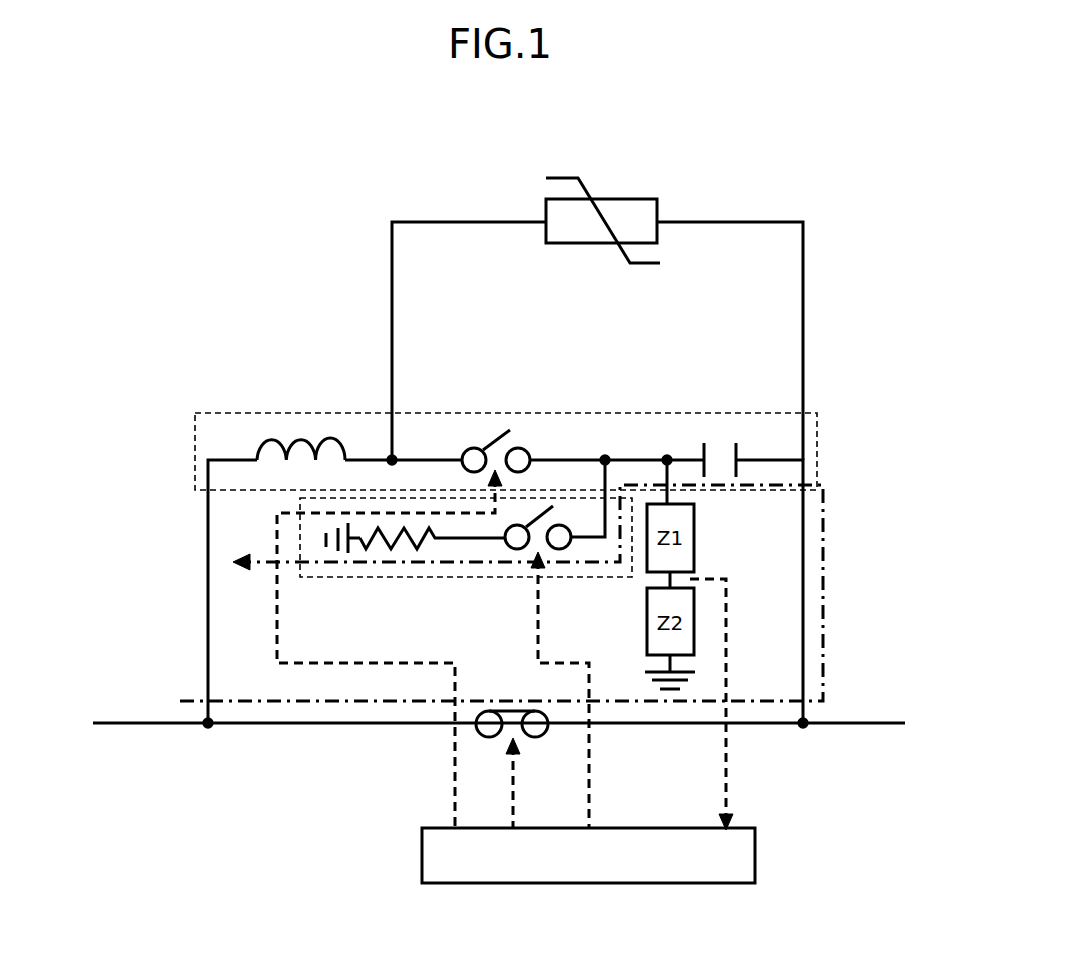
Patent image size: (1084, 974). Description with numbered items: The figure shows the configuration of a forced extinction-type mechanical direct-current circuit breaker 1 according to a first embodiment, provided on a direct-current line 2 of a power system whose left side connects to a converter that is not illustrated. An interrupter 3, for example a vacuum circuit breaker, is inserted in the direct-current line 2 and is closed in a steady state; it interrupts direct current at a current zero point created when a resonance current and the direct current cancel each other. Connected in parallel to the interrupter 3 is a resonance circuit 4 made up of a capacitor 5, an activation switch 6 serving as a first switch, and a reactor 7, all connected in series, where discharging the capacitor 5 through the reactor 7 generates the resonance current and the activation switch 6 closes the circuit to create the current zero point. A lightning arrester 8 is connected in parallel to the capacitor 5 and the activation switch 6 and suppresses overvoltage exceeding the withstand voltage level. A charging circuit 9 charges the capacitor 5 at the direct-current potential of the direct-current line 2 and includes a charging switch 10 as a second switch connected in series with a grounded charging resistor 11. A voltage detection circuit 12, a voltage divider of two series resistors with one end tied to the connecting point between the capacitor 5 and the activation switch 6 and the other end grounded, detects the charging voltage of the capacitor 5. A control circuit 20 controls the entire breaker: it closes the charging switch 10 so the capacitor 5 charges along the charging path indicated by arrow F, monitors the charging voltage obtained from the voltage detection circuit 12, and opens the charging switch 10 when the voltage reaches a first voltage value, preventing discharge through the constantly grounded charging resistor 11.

The direct-current circuit breaker 1 is at (768, 128).
The direct-current line 2 is at (140, 722).
The interrupter 3 is at (478, 733).
The resonance circuit 4 is at (820, 428).
The capacitor 5 is at (737, 445).
The activation switch 6 is at (521, 448).
The reactor 7 is at (262, 440).
The lightning arrester 8 is at (648, 199).
The charging circuit 9 is at (360, 578).
The charging switch 10 is at (517, 550).
The charging resistor 11 is at (378, 528).
The voltage detection circuit 12 is at (700, 572).
The control circuit 20 is at (757, 852).
The charging path F is at (823, 625).